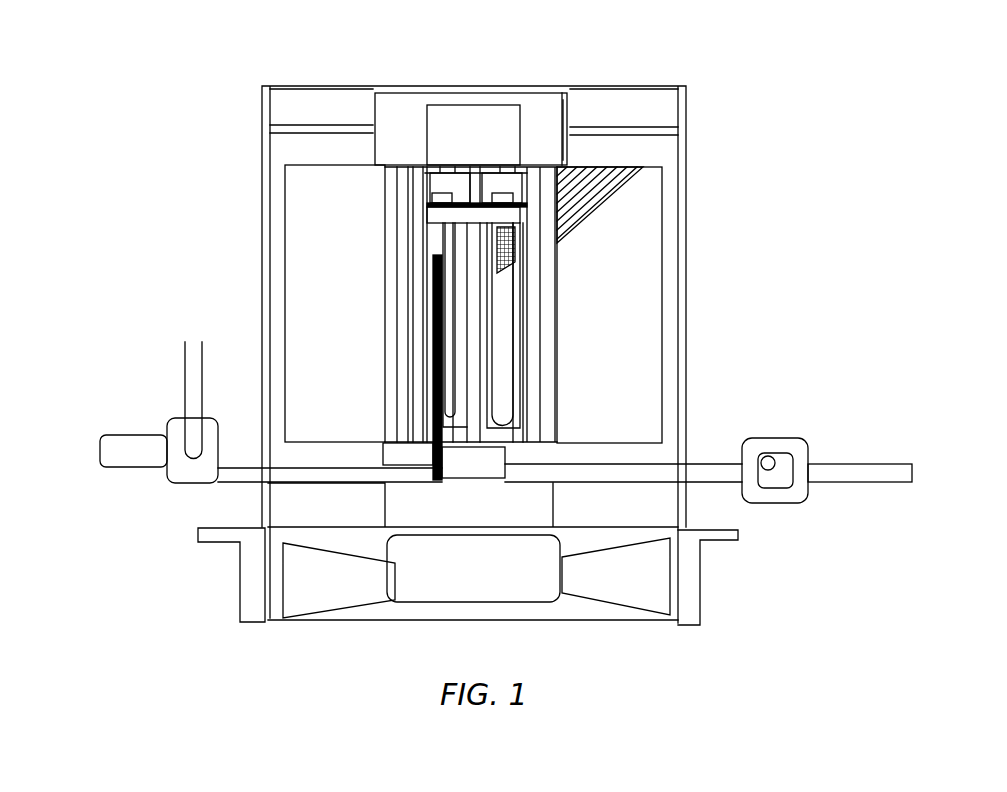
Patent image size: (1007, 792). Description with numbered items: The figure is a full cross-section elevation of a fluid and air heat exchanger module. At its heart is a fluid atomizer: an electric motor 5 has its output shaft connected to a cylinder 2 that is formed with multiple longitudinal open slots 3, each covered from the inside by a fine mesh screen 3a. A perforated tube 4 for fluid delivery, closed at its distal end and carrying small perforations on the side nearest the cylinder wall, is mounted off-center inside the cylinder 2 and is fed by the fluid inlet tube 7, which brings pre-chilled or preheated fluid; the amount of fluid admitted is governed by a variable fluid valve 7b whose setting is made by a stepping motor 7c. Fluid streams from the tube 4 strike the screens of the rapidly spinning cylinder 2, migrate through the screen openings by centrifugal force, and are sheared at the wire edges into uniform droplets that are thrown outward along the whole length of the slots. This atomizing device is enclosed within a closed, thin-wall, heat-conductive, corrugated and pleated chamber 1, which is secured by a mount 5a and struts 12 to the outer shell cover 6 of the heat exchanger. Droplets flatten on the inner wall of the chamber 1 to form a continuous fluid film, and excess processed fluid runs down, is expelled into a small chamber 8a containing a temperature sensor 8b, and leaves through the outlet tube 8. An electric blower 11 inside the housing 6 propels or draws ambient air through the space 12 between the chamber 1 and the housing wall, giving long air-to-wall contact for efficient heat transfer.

The closed thin wall heat conductive corrugated and pleated chamber 1 is at (643, 185).
The slotted and screened cylinder 2 is at (427, 190).
The open slot 3 is at (438, 232).
The fine mesh screen 3a is at (505, 253).
The perforated tube for fluid delivery 4 is at (432, 337).
The electric motor 5 is at (497, 123).
The mount for chamber assembly to heat exchanger shell cover 5a is at (563, 112).
The outer shell cover of heat exchanger 6 is at (690, 107).
The fluid inlet tube for pre-chilled or preheated fluid 7 is at (185, 353).
The variable fluid valve 7b is at (160, 420).
The stepping motor 7c is at (163, 437).
The outlet tube for processed fluid 8 is at (853, 463).
The small chamber 8a is at (770, 438).
The temperature sensor 8b is at (790, 457).
The electric blower 11 is at (700, 607).
The struts for mounting heat exchanger chamber to outer shell cover 12 is at (317, 157).